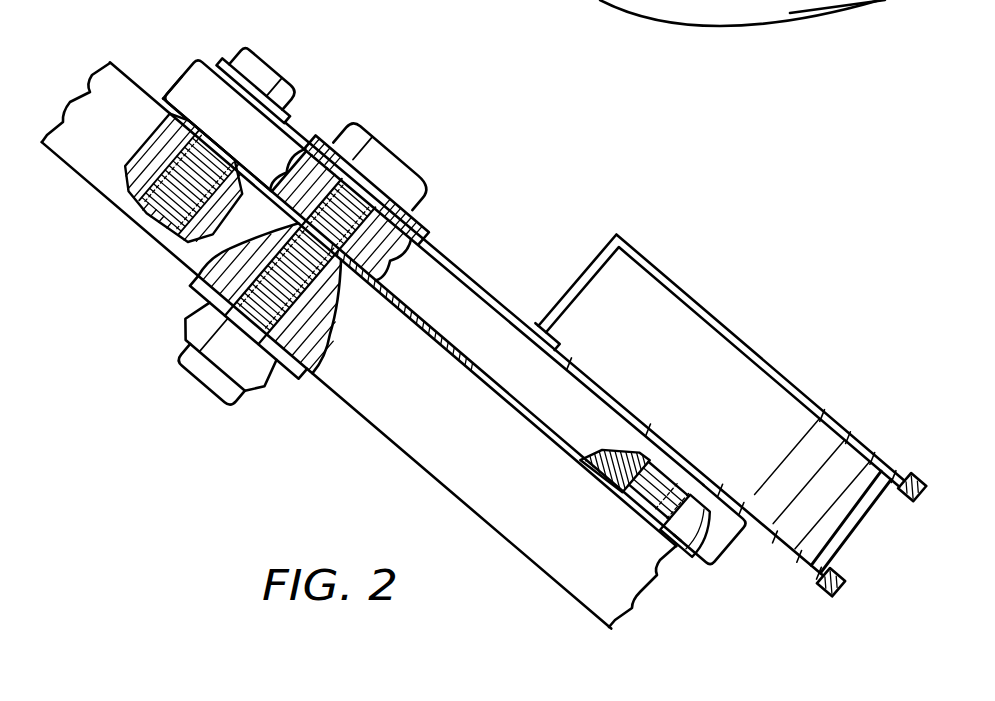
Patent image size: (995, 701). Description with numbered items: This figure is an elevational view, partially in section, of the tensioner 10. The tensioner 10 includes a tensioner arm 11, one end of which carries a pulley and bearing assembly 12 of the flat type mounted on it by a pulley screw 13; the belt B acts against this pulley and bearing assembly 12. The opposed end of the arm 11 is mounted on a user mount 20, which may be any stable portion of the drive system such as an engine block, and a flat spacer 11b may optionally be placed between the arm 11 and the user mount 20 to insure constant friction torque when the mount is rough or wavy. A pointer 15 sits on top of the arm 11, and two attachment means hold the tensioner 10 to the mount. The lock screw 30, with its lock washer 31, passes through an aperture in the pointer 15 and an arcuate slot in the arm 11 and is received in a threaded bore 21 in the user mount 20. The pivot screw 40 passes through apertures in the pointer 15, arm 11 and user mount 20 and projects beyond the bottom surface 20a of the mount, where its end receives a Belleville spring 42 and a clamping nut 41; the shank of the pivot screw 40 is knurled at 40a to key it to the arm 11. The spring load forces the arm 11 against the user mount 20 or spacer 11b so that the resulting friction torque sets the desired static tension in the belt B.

The tensioner 10 is at (553, 218).
The tensioner arm 11 is at (472, 303).
The flat spacer 11b is at (187, 108).
The pulley and bearing assembly 12 is at (705, 303).
The pulley screw 13 is at (685, 545).
The pointer 15 is at (293, 130).
The user mount 20 is at (369, 425).
The bottom surface 20a is at (418, 460).
The threaded bore 21 is at (148, 212).
The lock screw 30 is at (280, 63).
The lock washer 31 is at (229, 60).
The pivot screw 40 is at (392, 146).
The knurled portion 40a is at (405, 228).
The clamping nut 41 is at (262, 384).
The Belleville spring 42 is at (291, 376).
The belt B is at (820, 2).